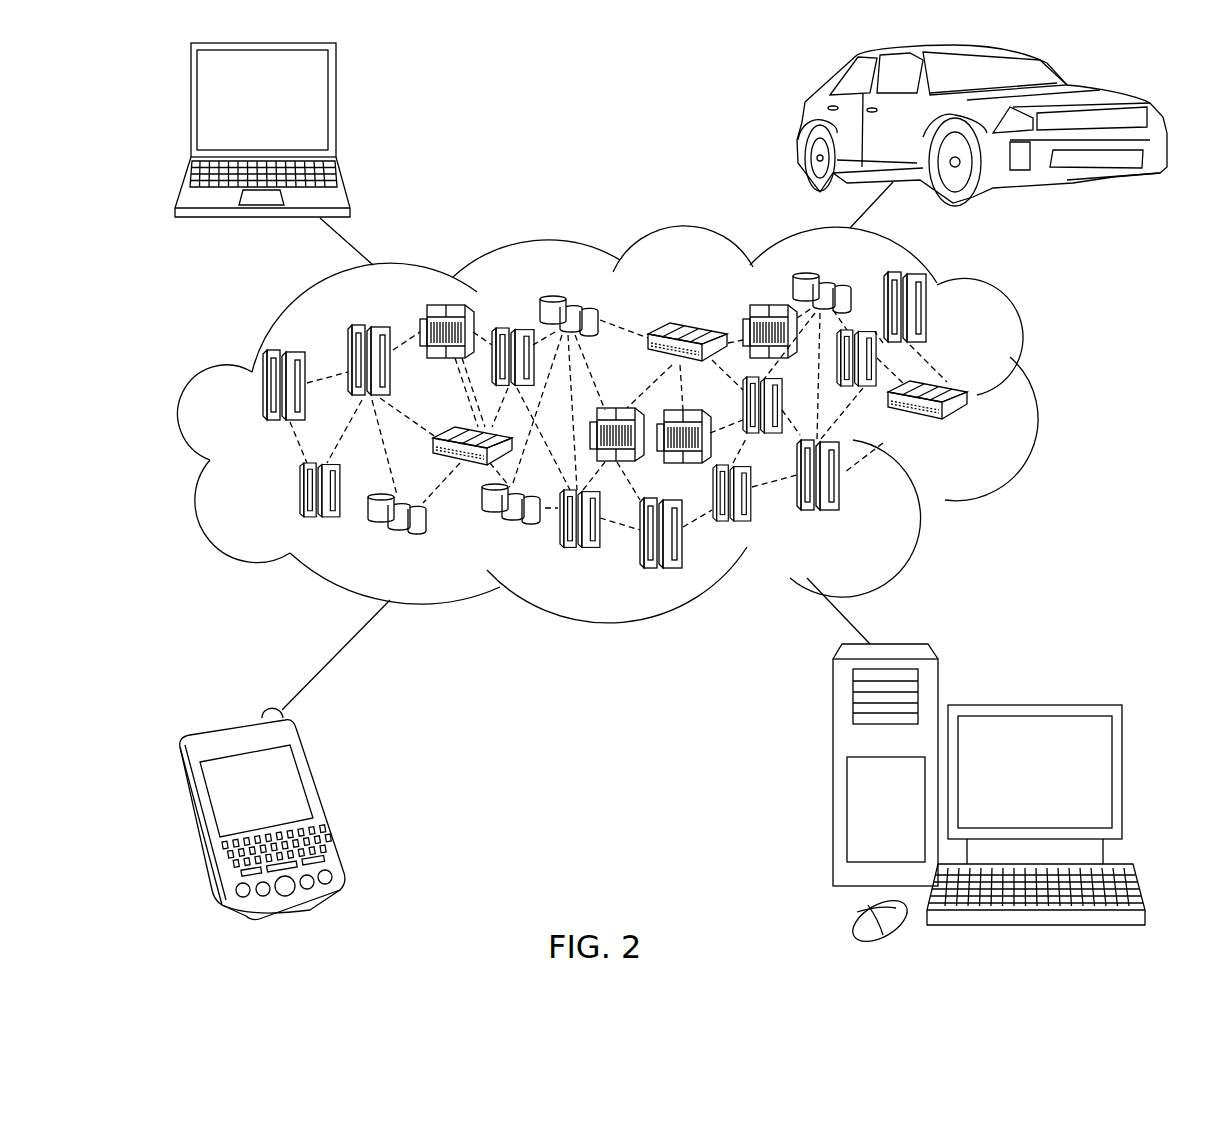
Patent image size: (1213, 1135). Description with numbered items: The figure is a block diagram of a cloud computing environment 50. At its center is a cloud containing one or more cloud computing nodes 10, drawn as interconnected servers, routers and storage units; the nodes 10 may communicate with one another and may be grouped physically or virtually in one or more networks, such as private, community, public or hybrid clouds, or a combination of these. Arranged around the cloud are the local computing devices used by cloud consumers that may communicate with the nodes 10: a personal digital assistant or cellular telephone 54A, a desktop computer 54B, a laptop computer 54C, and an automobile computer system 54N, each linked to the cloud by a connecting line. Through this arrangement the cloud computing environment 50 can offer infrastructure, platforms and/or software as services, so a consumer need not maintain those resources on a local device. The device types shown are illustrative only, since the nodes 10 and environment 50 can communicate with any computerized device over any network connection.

The cloud computing nodes 10 is at (978, 433).
The cloud computing environment 50 is at (1033, 397).
The personal digital assistant (PDA) or cellular telephone 54A is at (323, 804).
The desktop computer 54B is at (1032, 705).
The laptop computer 54C is at (335, 109).
The automobile computer system 54N is at (800, 122).